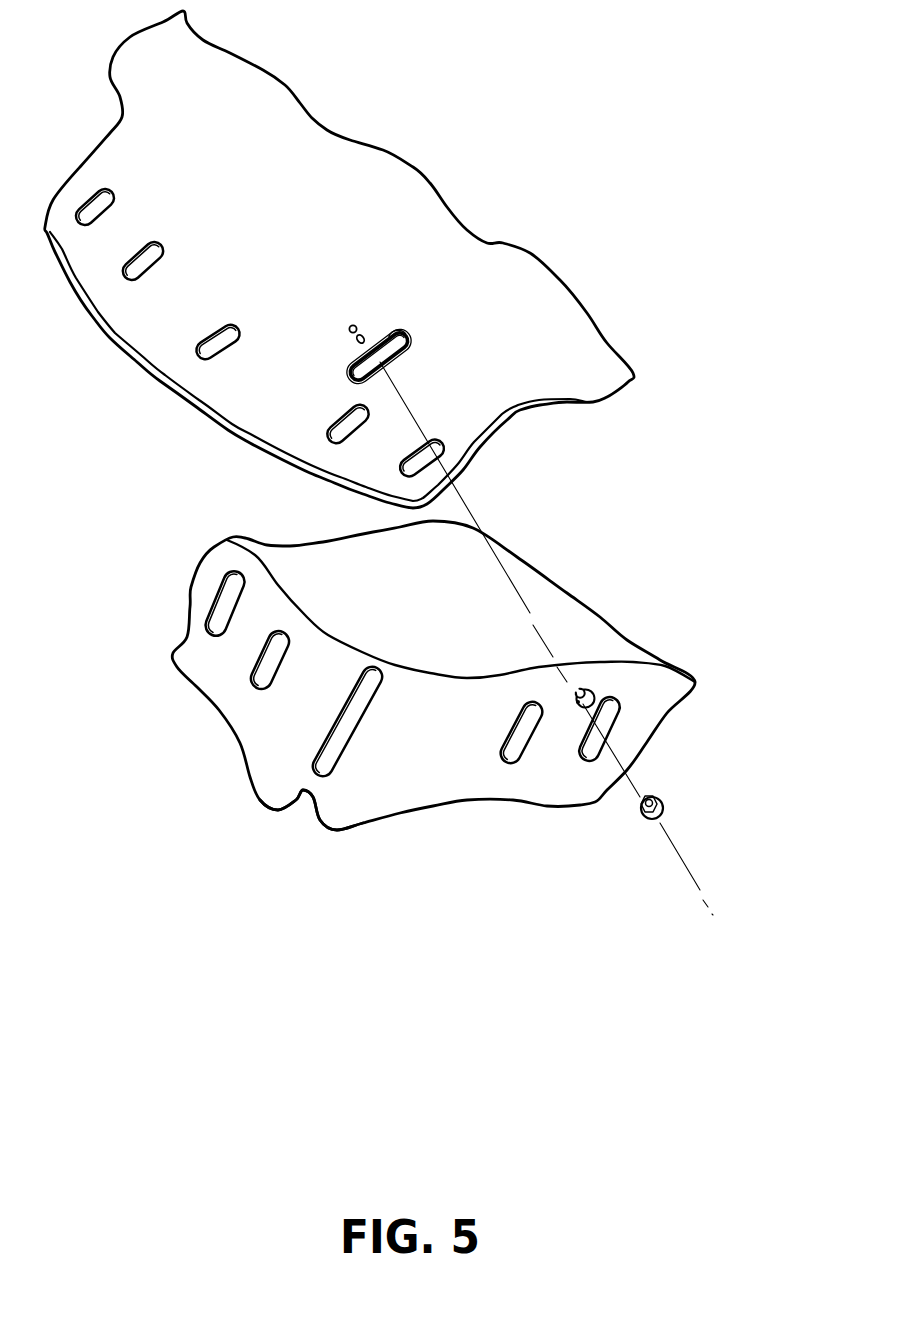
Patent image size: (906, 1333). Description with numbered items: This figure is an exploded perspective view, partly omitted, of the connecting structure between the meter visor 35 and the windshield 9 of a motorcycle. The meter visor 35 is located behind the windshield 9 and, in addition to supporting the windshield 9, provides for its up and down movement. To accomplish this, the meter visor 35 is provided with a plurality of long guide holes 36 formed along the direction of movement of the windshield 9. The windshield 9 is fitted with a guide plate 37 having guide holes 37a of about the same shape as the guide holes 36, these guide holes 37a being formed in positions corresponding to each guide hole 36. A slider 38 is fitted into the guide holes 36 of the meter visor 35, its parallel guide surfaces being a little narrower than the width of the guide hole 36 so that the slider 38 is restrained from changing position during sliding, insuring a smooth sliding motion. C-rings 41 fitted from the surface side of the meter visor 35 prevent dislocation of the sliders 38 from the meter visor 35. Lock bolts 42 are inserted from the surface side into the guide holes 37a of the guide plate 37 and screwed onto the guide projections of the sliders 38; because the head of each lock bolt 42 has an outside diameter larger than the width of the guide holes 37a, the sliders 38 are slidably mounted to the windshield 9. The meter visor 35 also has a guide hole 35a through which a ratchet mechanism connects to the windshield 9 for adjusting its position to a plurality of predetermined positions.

The windshield 9 is at (577, 363).
The meter visor 35 is at (460, 783).
The guide hole 35a is at (323, 778).
The long guide holes 36 is at (227, 610).
The guide plate 37 is at (398, 362).
The guide holes 37a is at (408, 333).
The slider 38 is at (667, 807).
The C-rings 41 is at (583, 688).
The lock bolts 42 is at (352, 326).